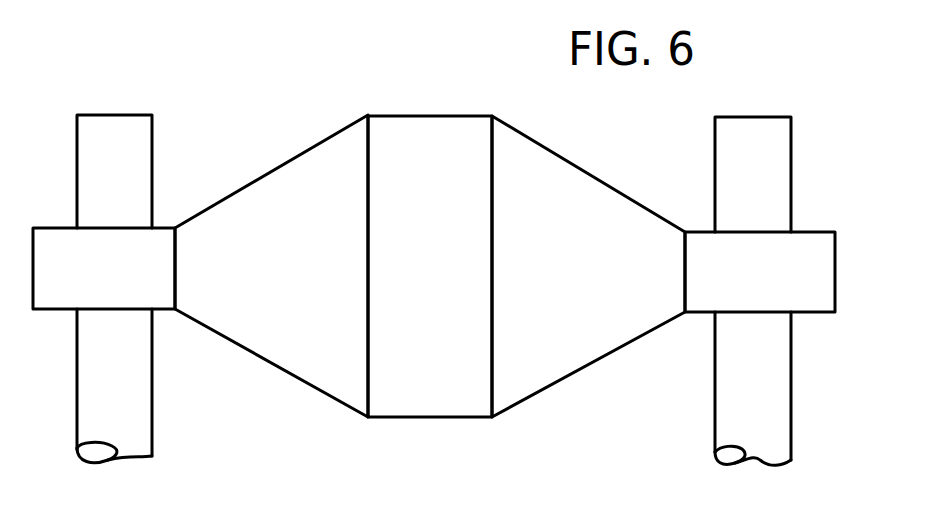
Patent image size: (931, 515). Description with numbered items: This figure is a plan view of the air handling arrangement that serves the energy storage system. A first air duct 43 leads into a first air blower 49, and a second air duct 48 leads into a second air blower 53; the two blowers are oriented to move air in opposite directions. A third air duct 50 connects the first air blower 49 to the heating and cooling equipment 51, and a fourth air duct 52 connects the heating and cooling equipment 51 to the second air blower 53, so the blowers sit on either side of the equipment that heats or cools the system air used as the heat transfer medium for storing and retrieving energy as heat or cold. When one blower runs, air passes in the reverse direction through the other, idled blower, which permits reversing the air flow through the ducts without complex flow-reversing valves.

The first air duct 43 is at (114, 289).
The second air duct 48 is at (753, 291).
The first air blower 49 is at (104, 268).
The third air duct 50 is at (271, 266).
The heating and cooling equipment 51 is at (430, 266).
The fourth air duct 52 is at (588, 266).
The second air blower 53 is at (760, 272).